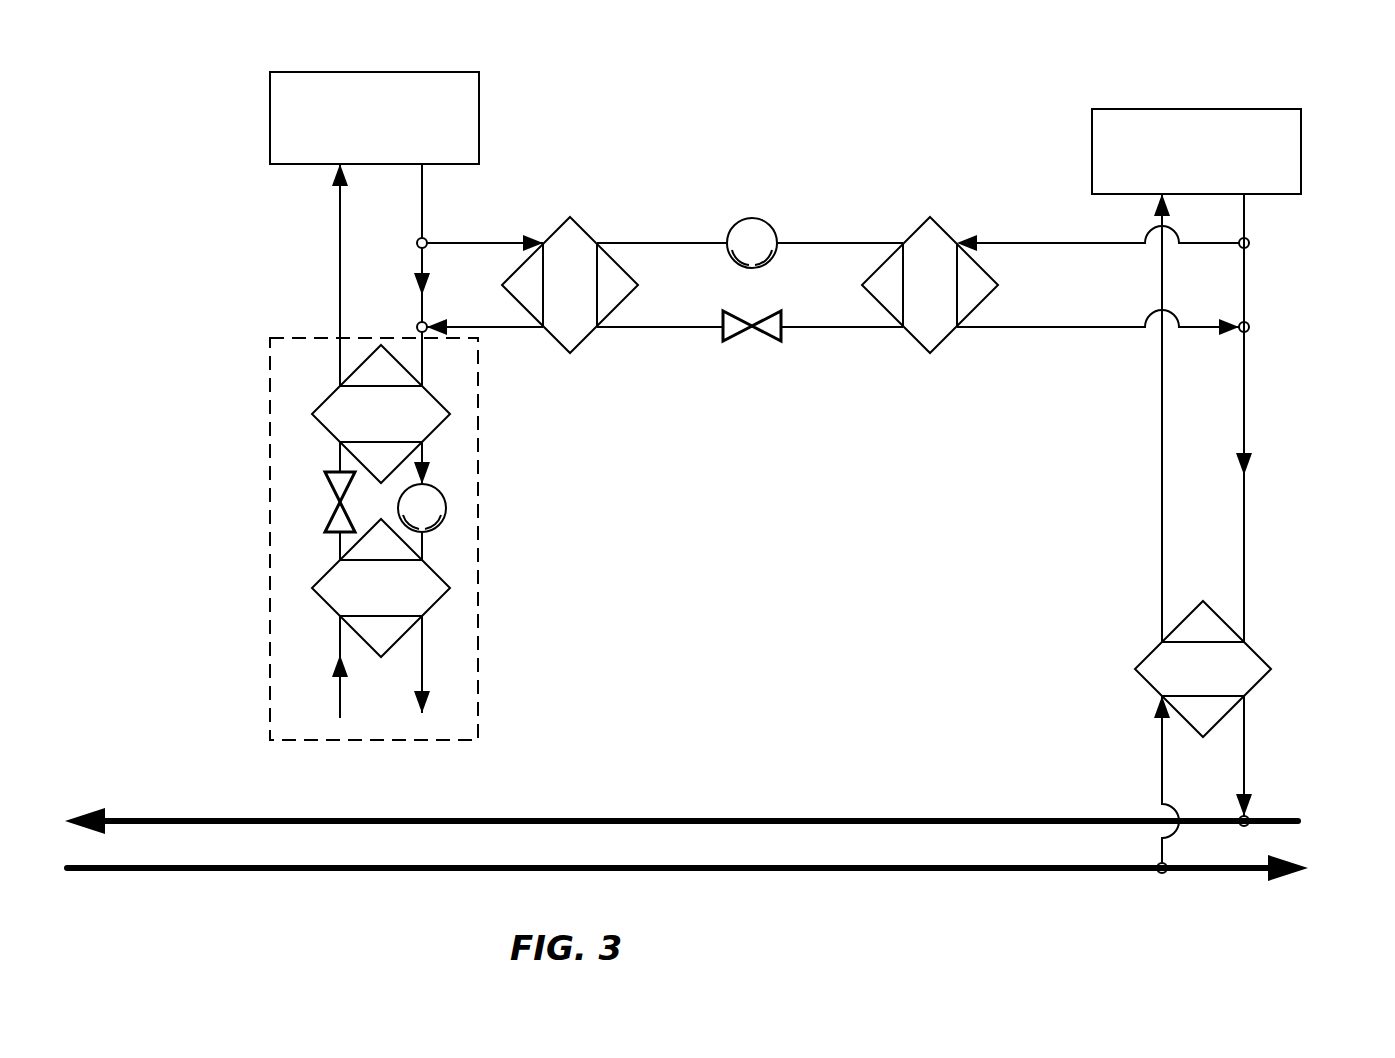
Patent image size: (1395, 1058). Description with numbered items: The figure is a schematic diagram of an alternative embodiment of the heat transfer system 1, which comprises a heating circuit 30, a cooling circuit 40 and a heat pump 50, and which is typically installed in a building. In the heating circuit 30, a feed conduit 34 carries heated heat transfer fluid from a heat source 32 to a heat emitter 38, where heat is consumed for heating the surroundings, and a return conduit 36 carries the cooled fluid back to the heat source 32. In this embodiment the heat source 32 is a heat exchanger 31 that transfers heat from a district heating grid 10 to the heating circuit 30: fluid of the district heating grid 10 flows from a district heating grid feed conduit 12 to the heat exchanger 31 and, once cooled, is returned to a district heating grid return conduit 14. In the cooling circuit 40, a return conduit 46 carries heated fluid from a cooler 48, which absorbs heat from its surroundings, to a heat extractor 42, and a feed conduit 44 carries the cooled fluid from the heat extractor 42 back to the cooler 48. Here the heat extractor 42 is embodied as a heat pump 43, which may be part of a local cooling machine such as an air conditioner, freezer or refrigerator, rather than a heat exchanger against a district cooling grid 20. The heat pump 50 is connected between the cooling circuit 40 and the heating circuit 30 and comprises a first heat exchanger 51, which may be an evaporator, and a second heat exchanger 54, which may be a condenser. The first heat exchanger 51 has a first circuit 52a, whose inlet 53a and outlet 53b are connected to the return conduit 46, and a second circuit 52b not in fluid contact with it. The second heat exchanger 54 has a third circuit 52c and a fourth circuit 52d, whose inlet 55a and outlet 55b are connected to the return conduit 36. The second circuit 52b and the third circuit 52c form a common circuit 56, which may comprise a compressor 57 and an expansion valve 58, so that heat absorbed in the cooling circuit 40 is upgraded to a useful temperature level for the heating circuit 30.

The heat transfer system 1 is at (175, 148).
The district heating grid 10 is at (605, 812).
The district heating grid feed conduit 12 is at (745, 873).
The district heating grid return conduit 14 is at (772, 817).
The district cooling grid 20 is at (227, 480).
The heating circuit 30 is at (1298, 228).
The heat exchanger 31 is at (1245, 660).
The heat source 32 is at (1160, 668).
The feed conduit 34 is at (1160, 540).
The return conduit 36 is at (1248, 405).
The heat emitter 38 is at (1270, 120).
The cooling circuit 40 is at (290, 205).
The heat extractor 42 is at (285, 403).
The heat pump 43 is at (475, 540).
The feed conduit 44 is at (340, 295).
The return conduit 46 is at (418, 212).
The cooler 48 is at (284, 118).
The heat pump 50 is at (707, 175).
The first heat exchanger 51 is at (580, 255).
The first circuit 52a is at (508, 243).
The second circuit 52b is at (665, 335).
The third circuit 52c is at (845, 335).
The fourth circuit 52d is at (997, 243).
The inlet 53a is at (490, 243).
The outlet 53b is at (498, 335).
The second heat exchanger 54 is at (944, 238).
The inlet 55a is at (1057, 243).
The outlet 55b is at (1047, 335).
The common circuit 56 is at (832, 243).
The compressor 57 is at (760, 235).
The expansion valve 58 is at (757, 345).